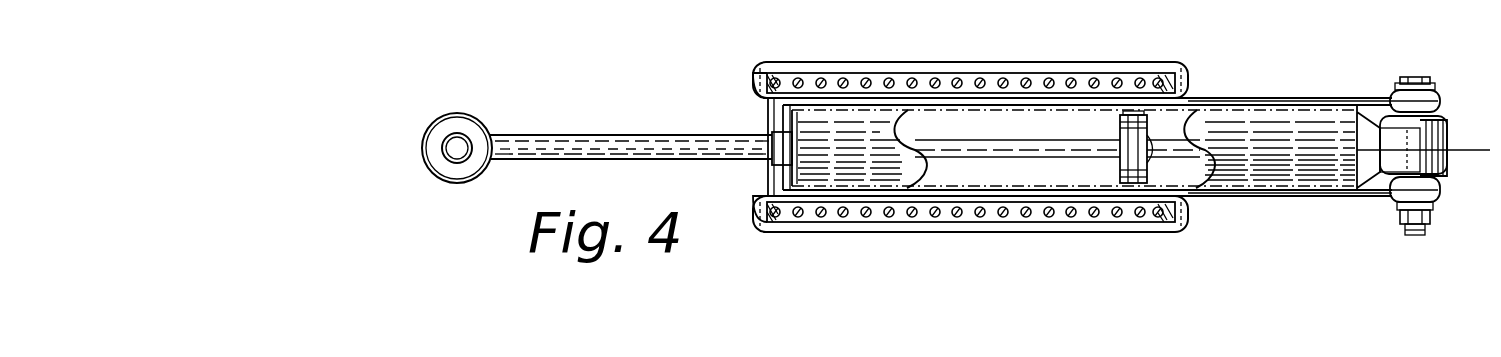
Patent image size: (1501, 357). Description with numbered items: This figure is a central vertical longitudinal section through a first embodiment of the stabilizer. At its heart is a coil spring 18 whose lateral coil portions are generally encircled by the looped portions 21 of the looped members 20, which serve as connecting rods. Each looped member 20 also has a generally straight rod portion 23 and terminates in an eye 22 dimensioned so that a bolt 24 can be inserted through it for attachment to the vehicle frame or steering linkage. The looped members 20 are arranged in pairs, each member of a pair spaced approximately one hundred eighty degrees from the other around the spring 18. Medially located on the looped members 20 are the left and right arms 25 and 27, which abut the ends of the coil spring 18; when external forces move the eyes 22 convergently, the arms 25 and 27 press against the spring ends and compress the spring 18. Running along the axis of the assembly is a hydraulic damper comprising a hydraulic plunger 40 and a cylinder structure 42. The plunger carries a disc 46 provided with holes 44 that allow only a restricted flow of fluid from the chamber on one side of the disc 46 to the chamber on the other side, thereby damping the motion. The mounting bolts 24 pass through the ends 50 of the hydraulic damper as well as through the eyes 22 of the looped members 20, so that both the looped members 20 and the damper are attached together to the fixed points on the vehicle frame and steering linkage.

The coil spring 18 is at (988, 82).
The looped members 20 is at (1204, 198).
The looped portions 21 is at (850, 71).
The eye 22 is at (1433, 96).
The straight rod portion 23 is at (1317, 198).
The bolt 24 is at (1418, 234).
The left arm 25 is at (755, 80).
The right arm 27 is at (1185, 80).
The hydraulic plunger 40 is at (617, 140).
The cylinder structure 42 is at (1301, 115).
The holes 44 is at (1143, 125).
The disc 46 is at (1143, 178).
The ends 50 is at (481, 122).